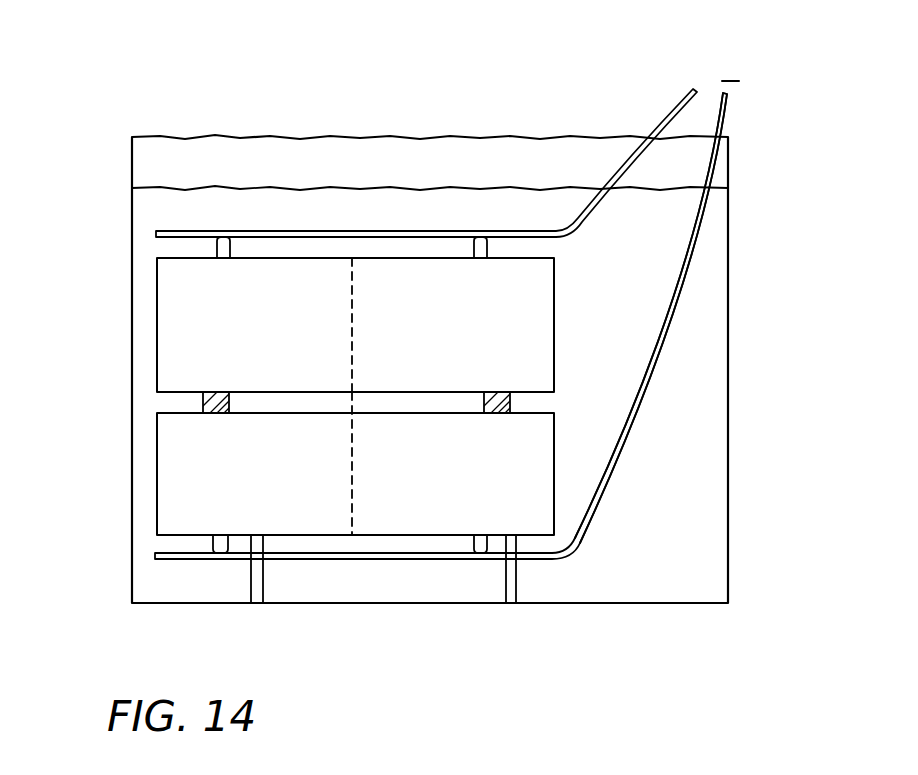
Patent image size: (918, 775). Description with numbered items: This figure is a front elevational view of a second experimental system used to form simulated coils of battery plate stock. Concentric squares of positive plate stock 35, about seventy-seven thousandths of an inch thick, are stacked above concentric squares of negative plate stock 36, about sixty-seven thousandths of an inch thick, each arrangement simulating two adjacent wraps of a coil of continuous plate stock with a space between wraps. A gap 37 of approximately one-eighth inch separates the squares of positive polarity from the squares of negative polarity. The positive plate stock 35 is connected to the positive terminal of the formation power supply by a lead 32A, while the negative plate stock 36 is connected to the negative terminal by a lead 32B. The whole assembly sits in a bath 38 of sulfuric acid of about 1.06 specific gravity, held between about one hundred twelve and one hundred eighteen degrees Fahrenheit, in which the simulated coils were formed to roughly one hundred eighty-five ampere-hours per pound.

The lead 32A is at (193, 226).
The lead 32B is at (200, 561).
The positive plate stock 35 is at (183, 330).
The negative plate stock 36 is at (180, 463).
The gap 37 is at (528, 408).
The bath 38 is at (697, 322).